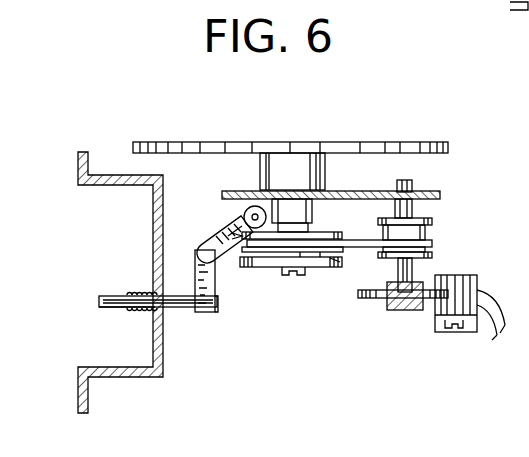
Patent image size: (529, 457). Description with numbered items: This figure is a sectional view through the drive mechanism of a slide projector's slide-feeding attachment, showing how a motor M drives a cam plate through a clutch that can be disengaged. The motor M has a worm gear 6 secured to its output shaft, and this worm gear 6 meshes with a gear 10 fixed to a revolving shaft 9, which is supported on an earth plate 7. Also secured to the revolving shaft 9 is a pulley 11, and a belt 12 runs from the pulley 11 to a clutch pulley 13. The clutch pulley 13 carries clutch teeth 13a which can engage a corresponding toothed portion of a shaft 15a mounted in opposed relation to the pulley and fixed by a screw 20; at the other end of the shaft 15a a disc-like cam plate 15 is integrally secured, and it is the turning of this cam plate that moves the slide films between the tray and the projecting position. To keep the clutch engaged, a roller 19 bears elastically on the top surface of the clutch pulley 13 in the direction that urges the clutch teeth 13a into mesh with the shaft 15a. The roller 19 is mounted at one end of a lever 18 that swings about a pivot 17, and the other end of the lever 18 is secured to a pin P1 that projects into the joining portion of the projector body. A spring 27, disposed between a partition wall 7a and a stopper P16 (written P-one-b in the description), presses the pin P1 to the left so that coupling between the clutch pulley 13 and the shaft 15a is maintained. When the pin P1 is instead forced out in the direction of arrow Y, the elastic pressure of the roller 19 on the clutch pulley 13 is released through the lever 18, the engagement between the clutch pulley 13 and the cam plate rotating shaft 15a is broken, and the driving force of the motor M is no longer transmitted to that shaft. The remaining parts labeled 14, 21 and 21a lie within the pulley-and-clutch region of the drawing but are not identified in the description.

The worm gear 6 is at (403, 309).
The earth plate 7 is at (441, 196).
The partition wall 7a is at (130, 378).
The revolving shaft 9 is at (413, 186).
The gear 10 is at (372, 300).
The pulley 11 is at (430, 233).
The belt 12 is at (432, 245).
The clutch pulley 13 is at (265, 252).
The clutch teeth 13a is at (247, 268).
The cam disc 14 is at (318, 246).
The cam plate 15 is at (318, 150).
The shaft 15a is at (290, 175).
The pivot 17 is at (205, 253).
The lever 18 is at (225, 234).
The roller 19 is at (255, 206).
The screw 20 is at (288, 276).
The cam disc 21 is at (318, 268).
The cam edge 21a is at (366, 259).
The spring 27 is at (138, 290).
The pin P1 is at (110, 294).
The pin P16 is at (131, 312).
The motor M is at (472, 283).
The arrow Y is at (90, 300).